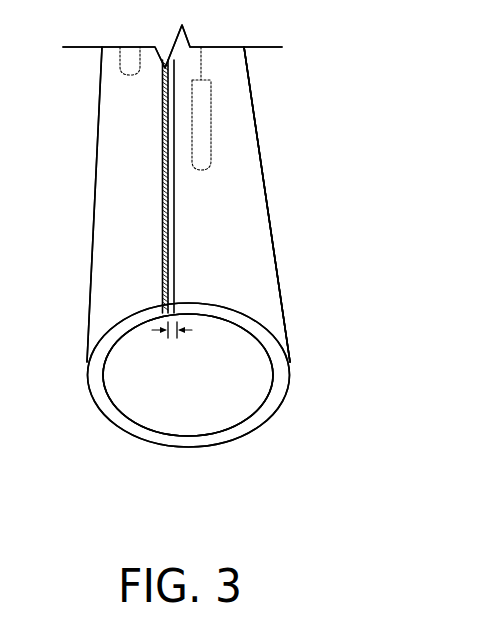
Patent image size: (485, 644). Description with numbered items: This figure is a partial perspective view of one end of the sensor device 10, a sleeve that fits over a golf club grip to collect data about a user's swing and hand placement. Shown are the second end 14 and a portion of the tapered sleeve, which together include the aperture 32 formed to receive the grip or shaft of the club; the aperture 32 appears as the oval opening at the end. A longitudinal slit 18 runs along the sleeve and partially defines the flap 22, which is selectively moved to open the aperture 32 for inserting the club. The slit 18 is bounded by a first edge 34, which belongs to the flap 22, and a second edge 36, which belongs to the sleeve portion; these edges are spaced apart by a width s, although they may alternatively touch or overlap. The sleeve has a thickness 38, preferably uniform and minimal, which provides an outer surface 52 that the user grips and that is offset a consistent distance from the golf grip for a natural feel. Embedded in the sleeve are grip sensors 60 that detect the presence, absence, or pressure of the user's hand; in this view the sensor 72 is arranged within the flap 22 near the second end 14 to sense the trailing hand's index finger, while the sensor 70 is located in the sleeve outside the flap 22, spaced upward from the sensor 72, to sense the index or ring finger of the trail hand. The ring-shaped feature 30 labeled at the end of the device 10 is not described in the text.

The sensor device 10 is at (330, 283).
The second end 14 is at (284, 358).
The slit 18 is at (176, 257).
The flap 22 is at (220, 193).
The ring 30 is at (228, 410).
The aperture 32 is at (155, 388).
The first edge 34 is at (240, 321).
The second edge 36 is at (158, 313).
The thickness 38 is at (280, 400).
The outer surface 52 is at (233, 134).
The grip sensors 60 is at (218, 90).
The sensor 70 is at (122, 62).
The sensor 72 is at (183, 126).
The width s is at (180, 340).